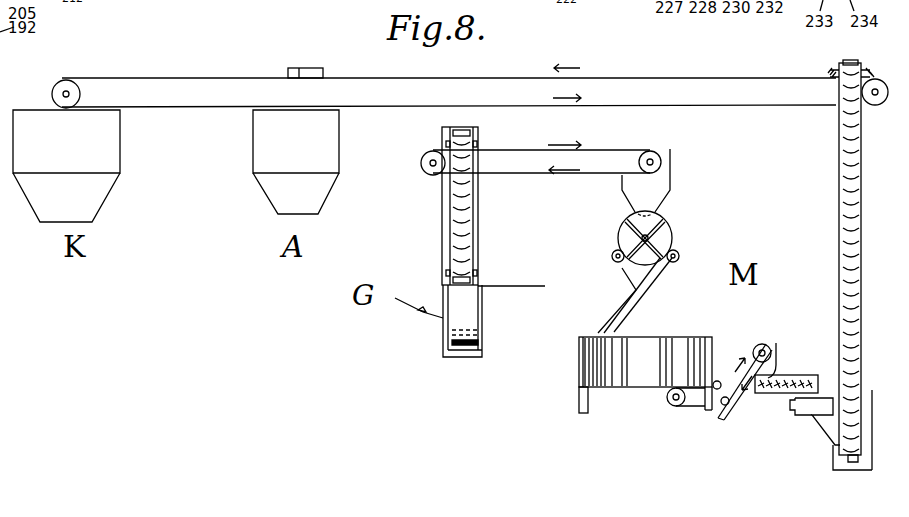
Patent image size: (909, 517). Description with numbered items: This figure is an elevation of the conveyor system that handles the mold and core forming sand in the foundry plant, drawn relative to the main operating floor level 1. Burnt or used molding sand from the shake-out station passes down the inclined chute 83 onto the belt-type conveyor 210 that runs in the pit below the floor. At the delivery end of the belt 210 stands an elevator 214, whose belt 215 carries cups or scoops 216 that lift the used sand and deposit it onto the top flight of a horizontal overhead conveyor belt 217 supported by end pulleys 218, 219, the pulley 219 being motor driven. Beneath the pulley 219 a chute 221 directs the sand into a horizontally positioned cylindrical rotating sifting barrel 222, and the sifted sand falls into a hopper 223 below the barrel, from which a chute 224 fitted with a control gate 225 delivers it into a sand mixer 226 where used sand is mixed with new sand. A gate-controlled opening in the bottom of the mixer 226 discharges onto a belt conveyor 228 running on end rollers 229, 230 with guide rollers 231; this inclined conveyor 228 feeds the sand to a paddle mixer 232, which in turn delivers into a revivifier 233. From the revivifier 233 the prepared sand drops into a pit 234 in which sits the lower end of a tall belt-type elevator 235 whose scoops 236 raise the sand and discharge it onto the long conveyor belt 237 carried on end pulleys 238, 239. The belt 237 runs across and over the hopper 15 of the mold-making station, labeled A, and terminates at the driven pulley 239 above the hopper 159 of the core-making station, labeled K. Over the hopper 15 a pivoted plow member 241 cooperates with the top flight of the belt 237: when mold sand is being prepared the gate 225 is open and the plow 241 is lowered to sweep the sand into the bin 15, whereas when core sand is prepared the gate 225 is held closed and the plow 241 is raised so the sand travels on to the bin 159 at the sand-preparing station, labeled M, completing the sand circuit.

The main operating floor level 1 is at (510, 286).
The hopper or bin 15 is at (318, 157).
The chute 83 is at (418, 312).
The hopper or bin 159 is at (103, 152).
The conveyor 210 is at (462, 312).
The elevator 214 is at (461, 206).
The belt 215 is at (470, 235).
The cups or scoops 216 is at (468, 215).
The horizontal overhead conveyor belt 217 is at (597, 149).
The end supporting pulley 218 is at (430, 170).
The end supporting pulley 219 is at (661, 162).
The chute 221 is at (665, 200).
The sifting barrel 222 is at (672, 232).
The hopper 223 is at (660, 276).
The chute 224 is at (622, 314).
The control gate 225 is at (600, 322).
The sand mixer 226 is at (580, 363).
The belt conveyor 228 is at (742, 346).
The end roller 229 is at (672, 406).
The end roller 230 is at (766, 345).
The guide rollers 231 is at (719, 408).
The paddle mixer 232 is at (790, 378).
The revivifier 233 is at (795, 410).
The pit 234 is at (843, 458).
The elevator 235 is at (830, 265).
The scoops 236 is at (855, 198).
The conveyor belt 237 is at (503, 77).
The end supporting pulley 238 is at (873, 100).
The end supporting pulley 239 is at (70, 88).
The plow member 241 is at (307, 72).